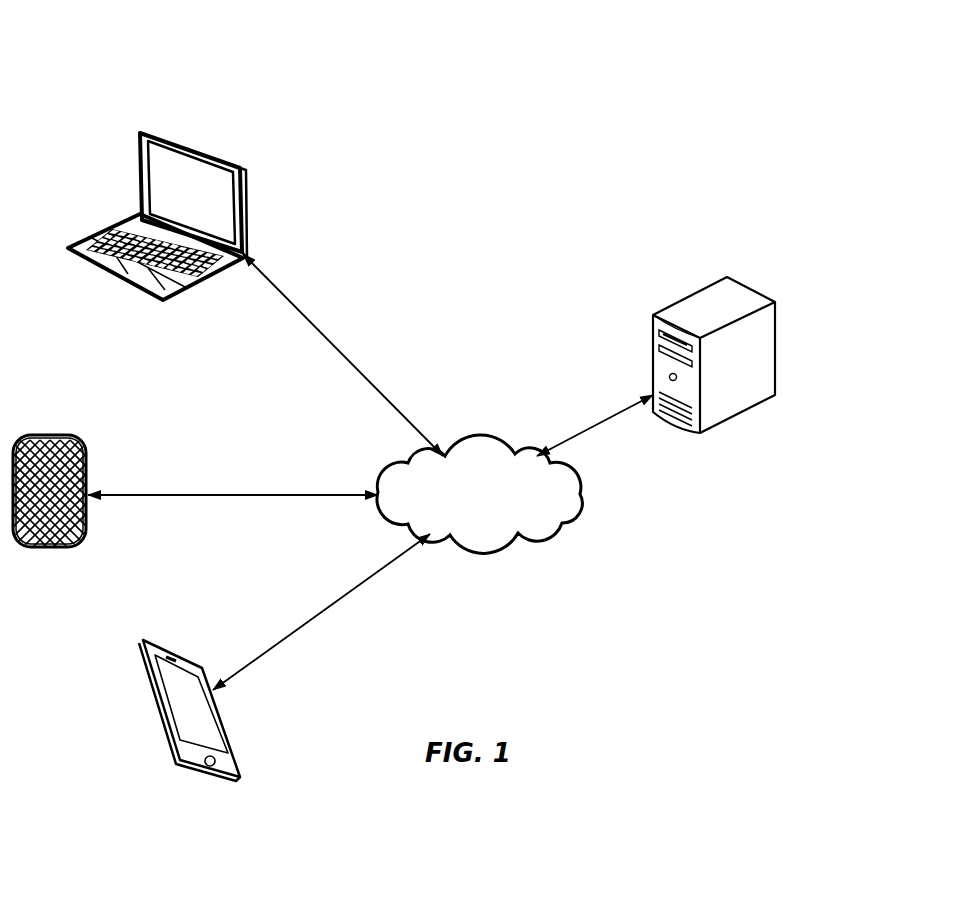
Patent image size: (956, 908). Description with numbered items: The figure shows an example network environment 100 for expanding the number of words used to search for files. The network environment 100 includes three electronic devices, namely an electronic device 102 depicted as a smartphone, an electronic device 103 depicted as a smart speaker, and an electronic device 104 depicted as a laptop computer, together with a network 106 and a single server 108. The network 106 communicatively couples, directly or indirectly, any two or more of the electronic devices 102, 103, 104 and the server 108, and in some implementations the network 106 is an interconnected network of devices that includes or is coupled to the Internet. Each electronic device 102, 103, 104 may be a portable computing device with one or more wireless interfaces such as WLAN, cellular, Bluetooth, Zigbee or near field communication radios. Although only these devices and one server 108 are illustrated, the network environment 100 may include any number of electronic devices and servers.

The network environment 100 is at (132, 72).
The electronic device 102 is at (185, 778).
The electronic device 103 is at (57, 548).
The electronic device 104 is at (157, 302).
The network 106 is at (507, 536).
The server 108 is at (663, 314).